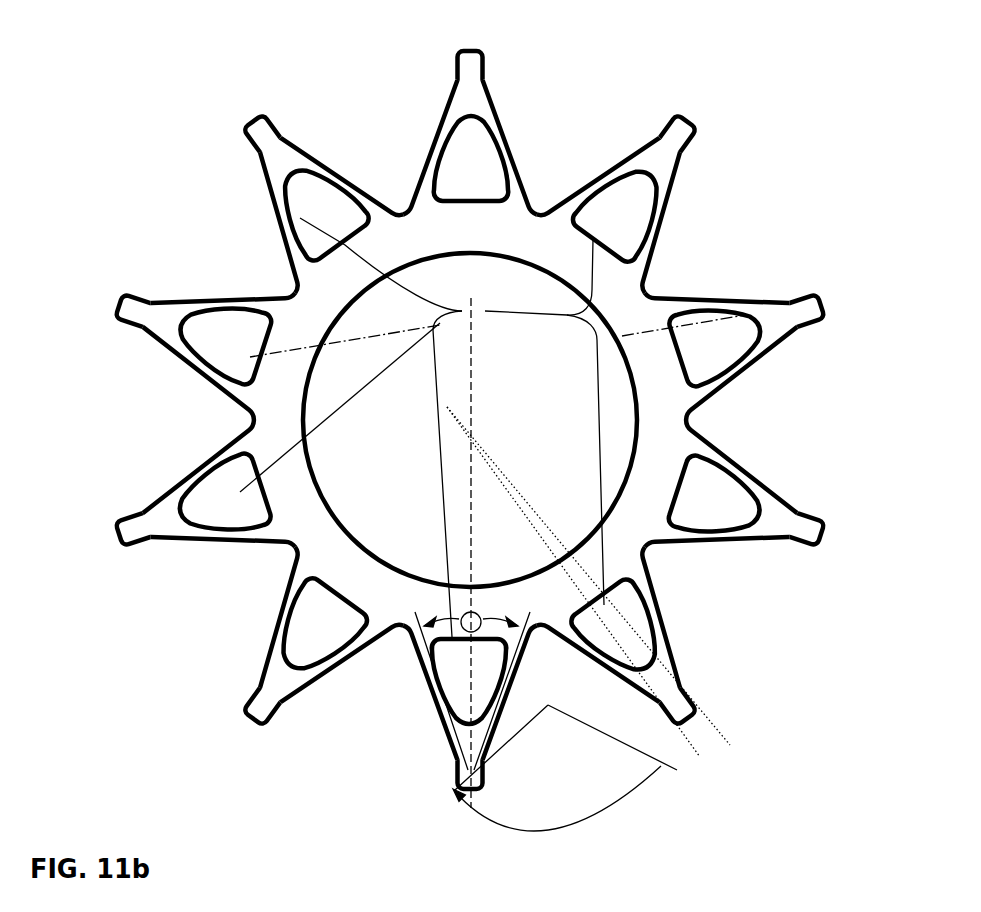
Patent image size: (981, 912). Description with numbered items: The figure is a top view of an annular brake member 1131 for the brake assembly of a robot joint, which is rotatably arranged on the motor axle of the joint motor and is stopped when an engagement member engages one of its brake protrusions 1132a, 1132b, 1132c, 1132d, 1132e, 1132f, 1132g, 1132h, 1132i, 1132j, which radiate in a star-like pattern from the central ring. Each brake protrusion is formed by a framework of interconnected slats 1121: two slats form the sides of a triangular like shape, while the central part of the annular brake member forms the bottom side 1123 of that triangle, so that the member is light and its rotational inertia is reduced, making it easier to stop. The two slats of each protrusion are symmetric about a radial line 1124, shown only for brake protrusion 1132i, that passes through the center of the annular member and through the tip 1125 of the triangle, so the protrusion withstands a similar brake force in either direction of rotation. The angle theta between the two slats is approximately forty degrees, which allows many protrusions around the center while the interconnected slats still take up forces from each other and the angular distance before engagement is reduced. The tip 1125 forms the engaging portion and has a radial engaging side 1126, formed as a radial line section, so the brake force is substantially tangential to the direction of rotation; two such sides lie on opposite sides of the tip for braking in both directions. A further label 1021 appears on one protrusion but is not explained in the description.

The annular brake member 1131 is at (176, 46).
The bottom side of the triangular like shape 1123 is at (462, 311).
The interconnected slats 1121 is at (482, 445).
The tip of triangular shape 1125 is at (470, 70).
The spoke web 1021 is at (513, 153).
The radial line 1124 is at (710, 713).
The radial engaging side 1126 is at (690, 693).
The brake protrusion 1132a is at (97, 540).
The brake protrusion 1132b is at (100, 298).
The brake protrusion 1132c is at (241, 103).
The brake protrusion 1132d is at (515, 107).
The brake protrusion 1132e is at (693, 115).
The brake protrusion 1132f is at (837, 297).
The brake protrusion 1132g is at (840, 546).
The brake protrusion 1132h is at (698, 739).
The brake protrusion 1132i is at (471, 834).
The brake protrusion 1132j is at (238, 739).